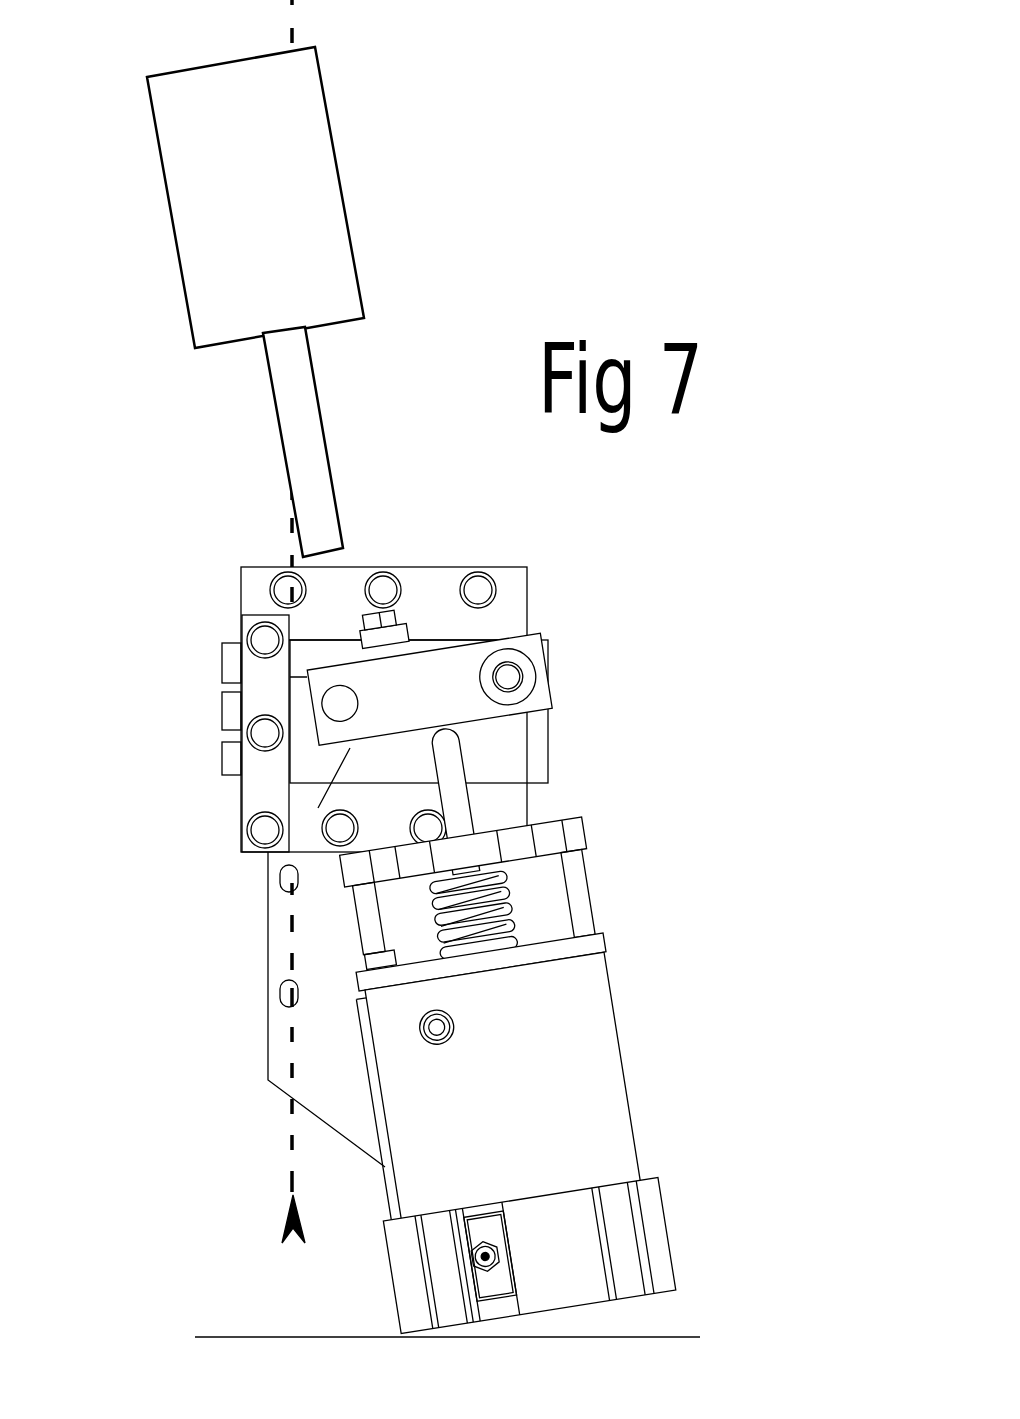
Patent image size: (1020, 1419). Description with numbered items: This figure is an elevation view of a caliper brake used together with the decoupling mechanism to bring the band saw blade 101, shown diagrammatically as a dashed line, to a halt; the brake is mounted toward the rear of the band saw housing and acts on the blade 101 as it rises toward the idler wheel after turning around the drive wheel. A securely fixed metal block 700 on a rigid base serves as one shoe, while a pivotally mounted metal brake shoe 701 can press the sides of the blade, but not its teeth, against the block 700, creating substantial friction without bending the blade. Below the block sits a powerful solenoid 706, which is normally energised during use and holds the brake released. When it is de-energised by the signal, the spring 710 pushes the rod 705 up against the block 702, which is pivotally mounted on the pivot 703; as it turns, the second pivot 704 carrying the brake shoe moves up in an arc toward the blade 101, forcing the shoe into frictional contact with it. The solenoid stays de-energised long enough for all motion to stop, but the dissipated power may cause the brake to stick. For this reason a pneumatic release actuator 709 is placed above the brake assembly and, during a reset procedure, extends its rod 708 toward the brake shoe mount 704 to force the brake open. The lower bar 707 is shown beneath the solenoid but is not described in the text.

The blade 101 is at (283, 1182).
The metal block 700 is at (250, 670).
The brake shoe 701 is at (313, 765).
The block 702 is at (429, 689).
The pivot 703 is at (508, 677).
The second pivot 704 is at (340, 693).
The rod 705 is at (454, 801).
The solenoid 706 is at (497, 1077).
The base bar 707 is at (529, 1255).
The rod 708 is at (327, 445).
The pneumatic release actuator 709 is at (345, 200).
The spring 710 is at (470, 895).